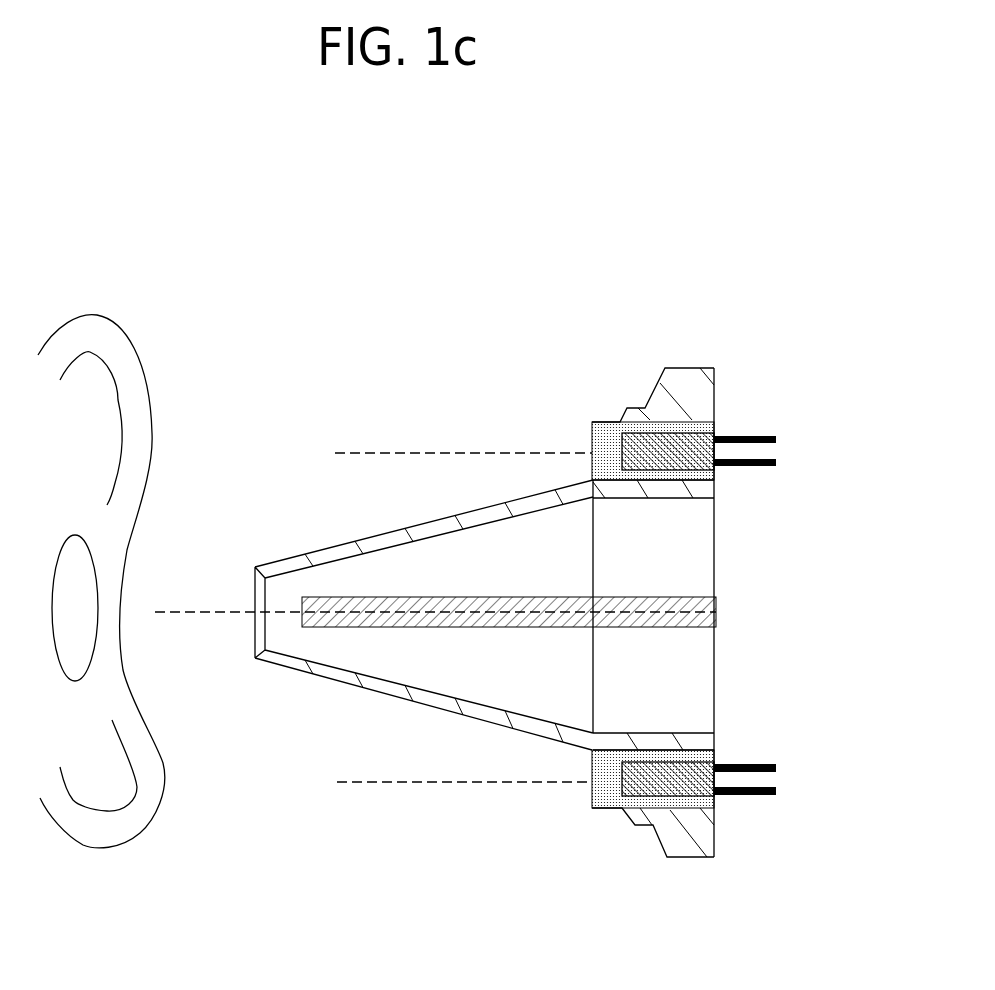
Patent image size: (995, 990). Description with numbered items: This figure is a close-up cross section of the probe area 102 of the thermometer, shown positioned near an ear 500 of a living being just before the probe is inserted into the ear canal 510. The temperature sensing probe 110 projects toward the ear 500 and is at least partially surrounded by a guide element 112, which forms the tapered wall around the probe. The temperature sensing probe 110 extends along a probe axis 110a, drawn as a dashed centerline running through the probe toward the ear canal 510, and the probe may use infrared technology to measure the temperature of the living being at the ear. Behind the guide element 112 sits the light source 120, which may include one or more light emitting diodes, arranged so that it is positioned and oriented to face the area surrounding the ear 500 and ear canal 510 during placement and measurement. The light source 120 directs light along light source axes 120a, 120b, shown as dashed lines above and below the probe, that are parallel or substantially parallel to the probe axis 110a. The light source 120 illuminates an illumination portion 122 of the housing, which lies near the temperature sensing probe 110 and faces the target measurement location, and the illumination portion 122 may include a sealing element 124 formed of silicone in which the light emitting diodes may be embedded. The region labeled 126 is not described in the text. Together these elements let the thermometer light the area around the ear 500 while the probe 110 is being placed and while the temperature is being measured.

The probe area 102 is at (362, 304).
The temperature sensing probe 110 is at (307, 628).
The probe axis 110a is at (388, 615).
The guide element 112 is at (388, 540).
The light source 120 is at (717, 423).
The light source axis 120a is at (462, 457).
The light source axis 120b is at (427, 772).
The illumination portion 122 is at (592, 433).
The sealing element 124 is at (603, 792).
The housing flange 126 is at (673, 383).
The ear 500 is at (107, 828).
The ear canal 510 is at (67, 592).